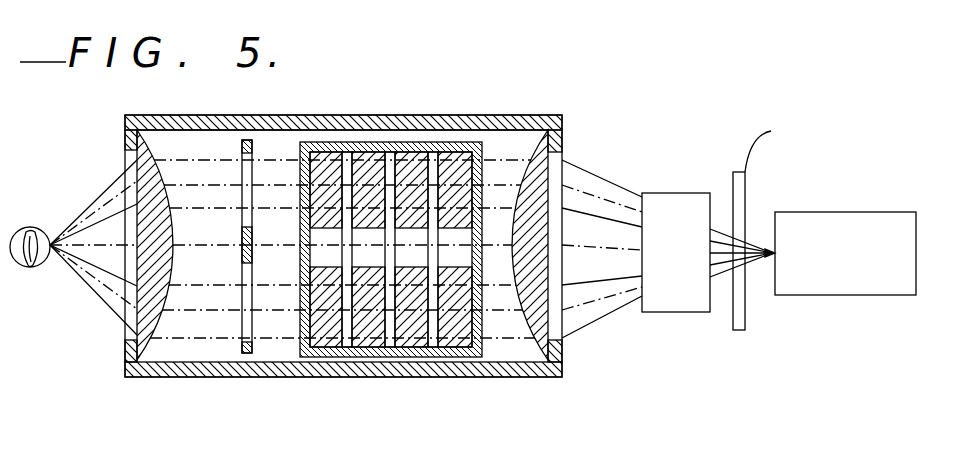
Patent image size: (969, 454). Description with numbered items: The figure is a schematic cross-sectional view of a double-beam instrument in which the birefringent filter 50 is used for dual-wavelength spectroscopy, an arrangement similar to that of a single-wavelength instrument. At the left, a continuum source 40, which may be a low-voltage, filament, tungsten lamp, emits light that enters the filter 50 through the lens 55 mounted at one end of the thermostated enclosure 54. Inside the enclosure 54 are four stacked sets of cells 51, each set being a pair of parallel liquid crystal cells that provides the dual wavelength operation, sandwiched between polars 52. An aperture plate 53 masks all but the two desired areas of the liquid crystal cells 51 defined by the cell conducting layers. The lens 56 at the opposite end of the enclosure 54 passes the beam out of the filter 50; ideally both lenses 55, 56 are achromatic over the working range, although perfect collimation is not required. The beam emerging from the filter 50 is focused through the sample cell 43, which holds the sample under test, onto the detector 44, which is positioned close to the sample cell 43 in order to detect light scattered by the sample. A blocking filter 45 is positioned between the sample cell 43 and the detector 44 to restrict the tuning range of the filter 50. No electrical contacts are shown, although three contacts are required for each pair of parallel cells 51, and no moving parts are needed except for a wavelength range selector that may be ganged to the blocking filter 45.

The continuum source 40 is at (33, 228).
The sample cell 43 is at (658, 302).
The detector 44 is at (866, 220).
The blocking filter 45 is at (745, 190).
The birefringent filter 50 is at (520, 119).
The cells 51 is at (462, 223).
The polars 52 is at (475, 150).
The aperture plate 53 is at (243, 139).
The thermostated enclosure 54 is at (468, 123).
The lens 55 is at (140, 172).
The lens 56 is at (548, 237).